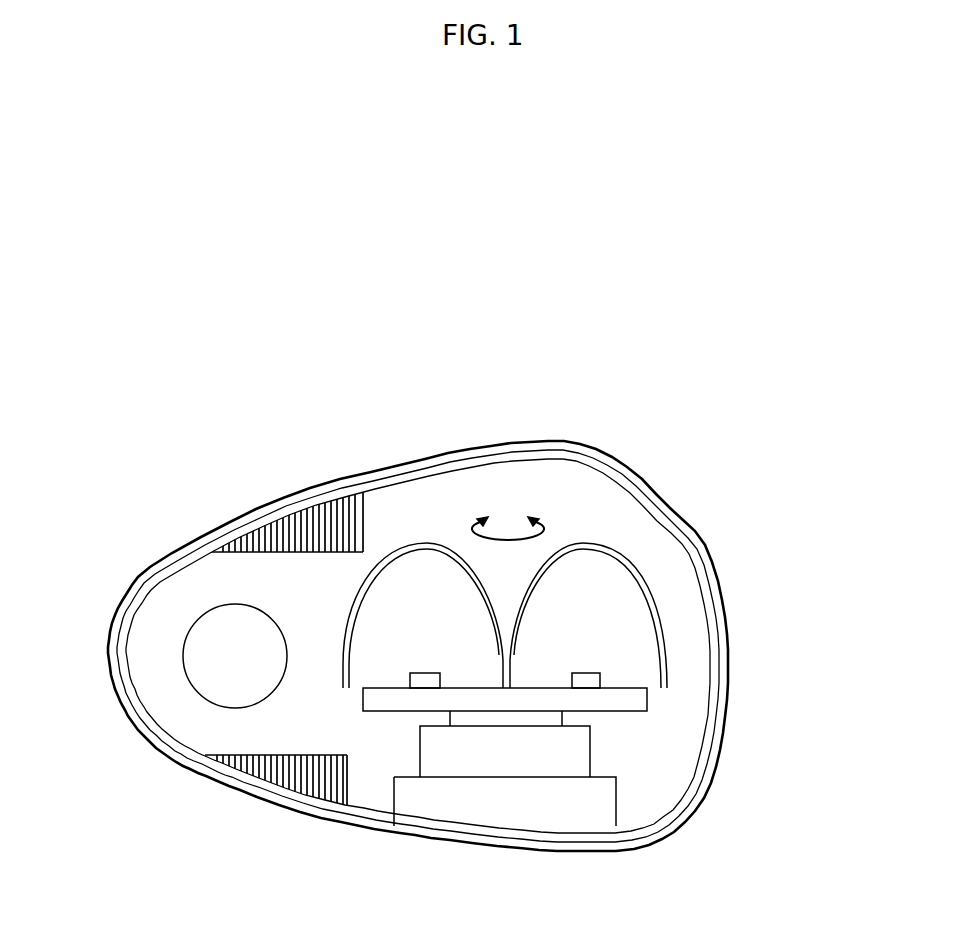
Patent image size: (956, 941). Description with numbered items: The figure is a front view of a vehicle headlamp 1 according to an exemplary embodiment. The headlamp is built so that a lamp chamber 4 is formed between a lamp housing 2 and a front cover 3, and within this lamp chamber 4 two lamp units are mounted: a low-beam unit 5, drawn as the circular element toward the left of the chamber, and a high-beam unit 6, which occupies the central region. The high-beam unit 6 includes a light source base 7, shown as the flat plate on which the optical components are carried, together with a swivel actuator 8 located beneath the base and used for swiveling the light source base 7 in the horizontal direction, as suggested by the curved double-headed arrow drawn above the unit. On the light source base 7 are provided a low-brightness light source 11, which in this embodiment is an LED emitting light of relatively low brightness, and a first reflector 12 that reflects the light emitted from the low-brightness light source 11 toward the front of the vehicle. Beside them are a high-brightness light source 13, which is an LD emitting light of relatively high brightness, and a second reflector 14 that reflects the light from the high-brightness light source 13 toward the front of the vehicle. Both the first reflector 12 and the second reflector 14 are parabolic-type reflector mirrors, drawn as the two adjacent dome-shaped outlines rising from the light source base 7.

The vehicle headlamp 1 is at (293, 447).
The lamp housing 2 is at (622, 483).
The front cover 3 is at (300, 813).
The lamp chamber 4 is at (707, 736).
The low-beam unit 5 is at (186, 695).
The high-beam unit 6 is at (647, 563).
The light source base 7 is at (623, 700).
The swivel actuator 8 is at (437, 750).
The low-brightness light source 11 is at (428, 673).
The first reflector 12 is at (357, 592).
The high-brightness light source 13 is at (587, 673).
The second reflector 14 is at (667, 627).